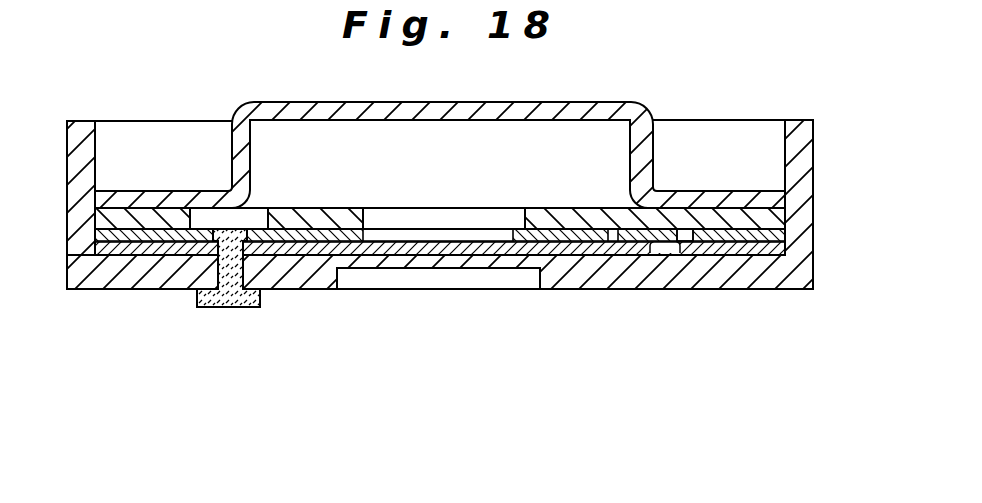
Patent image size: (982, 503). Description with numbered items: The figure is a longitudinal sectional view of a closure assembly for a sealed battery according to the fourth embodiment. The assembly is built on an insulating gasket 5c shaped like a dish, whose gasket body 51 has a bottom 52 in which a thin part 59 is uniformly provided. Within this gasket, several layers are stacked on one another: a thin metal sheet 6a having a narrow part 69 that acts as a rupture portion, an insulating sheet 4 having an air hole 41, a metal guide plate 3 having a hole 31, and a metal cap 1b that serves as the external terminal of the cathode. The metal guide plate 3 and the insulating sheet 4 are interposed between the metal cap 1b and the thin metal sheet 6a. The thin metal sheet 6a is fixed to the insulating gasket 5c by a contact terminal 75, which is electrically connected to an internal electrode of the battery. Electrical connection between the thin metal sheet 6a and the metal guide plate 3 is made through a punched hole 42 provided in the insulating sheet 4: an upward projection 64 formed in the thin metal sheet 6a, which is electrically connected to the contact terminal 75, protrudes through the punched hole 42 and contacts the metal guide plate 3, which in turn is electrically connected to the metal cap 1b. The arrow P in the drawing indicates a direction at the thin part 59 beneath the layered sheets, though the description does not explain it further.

The metal cap 1b is at (648, 150).
The metal guide plate 3 is at (742, 220).
The hole 31 is at (363, 213).
The air hole 41 is at (517, 236).
The insulating sheet 4 is at (750, 236).
The thin metal sheet 6a is at (755, 250).
The gasket body 51 is at (718, 275).
The bottom 52 is at (152, 280).
The insulating gasket 5c is at (588, 290).
The thin part 59 is at (458, 265).
The narrow part 69 is at (357, 260).
The contact terminal 75 is at (210, 307).
The upward projection 64 is at (648, 240).
The punched hole 42 is at (688, 240).
The pressure direction P is at (470, 272).